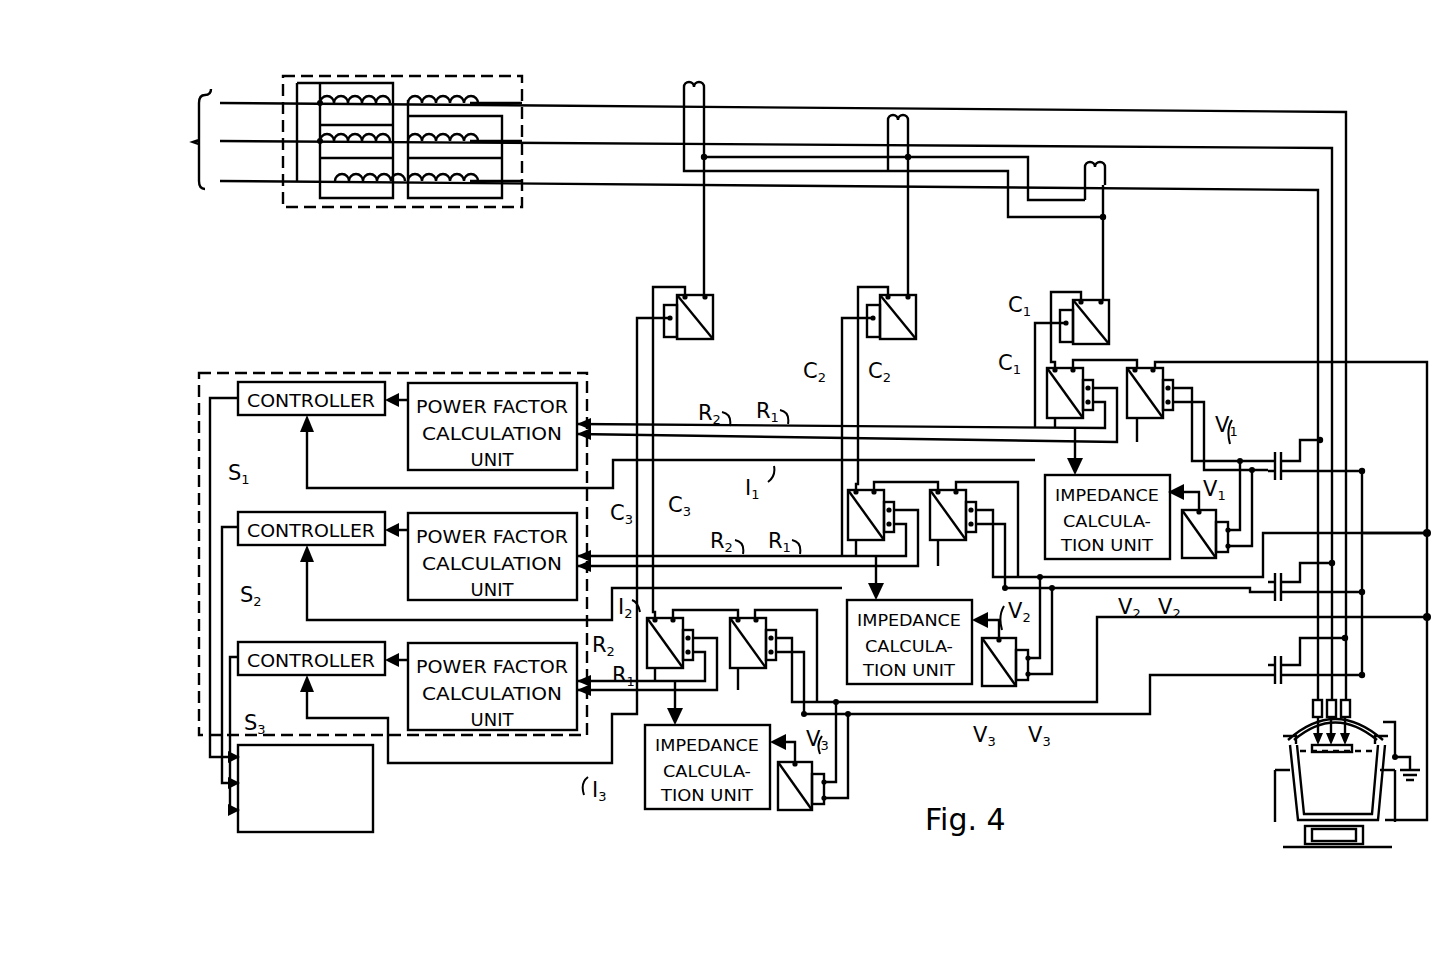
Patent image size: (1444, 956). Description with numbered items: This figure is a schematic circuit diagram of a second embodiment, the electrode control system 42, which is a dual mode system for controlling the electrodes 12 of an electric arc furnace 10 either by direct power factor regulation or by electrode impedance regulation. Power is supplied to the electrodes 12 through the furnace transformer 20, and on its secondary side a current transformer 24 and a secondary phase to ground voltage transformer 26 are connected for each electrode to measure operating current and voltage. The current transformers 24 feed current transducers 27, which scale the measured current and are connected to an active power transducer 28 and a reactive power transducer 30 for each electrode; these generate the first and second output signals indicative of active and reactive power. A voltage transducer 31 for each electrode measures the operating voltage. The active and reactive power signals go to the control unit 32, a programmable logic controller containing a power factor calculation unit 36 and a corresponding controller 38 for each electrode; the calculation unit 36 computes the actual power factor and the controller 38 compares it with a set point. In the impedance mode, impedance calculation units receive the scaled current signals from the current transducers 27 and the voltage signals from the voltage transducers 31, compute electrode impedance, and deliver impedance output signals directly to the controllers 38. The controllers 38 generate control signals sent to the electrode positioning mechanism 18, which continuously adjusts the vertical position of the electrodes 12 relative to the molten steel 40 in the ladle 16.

The electric arc furnace 10 is at (1236, 759).
The electrodes 12 is at (1234, 730).
The ladle 16 is at (1282, 826).
The electrode positioning mechanism 18 is at (373, 782).
The furnace transformer 20 is at (302, 207).
The current transformer 24 is at (1122, 172).
The secondary phase to ground voltage transformer 26 is at (1288, 698).
The current transducer 27 is at (1117, 345).
The active power transducer 28 is at (702, 624).
The reactive power transducer 30 is at (746, 684).
The voltage transducer 31 is at (840, 816).
The control unit 32 is at (520, 373).
The power factor calculation unit 36 is at (408, 726).
The controller 38 is at (297, 689).
The molten steel 40 is at (1366, 800).
The electrode control system 42 is at (1210, 92).